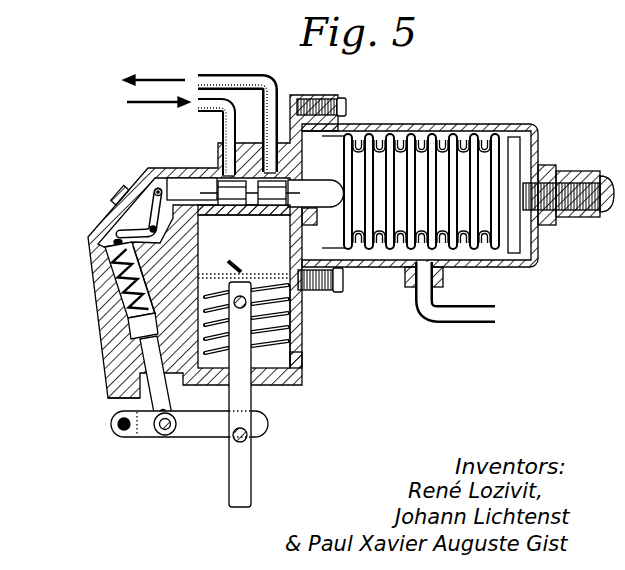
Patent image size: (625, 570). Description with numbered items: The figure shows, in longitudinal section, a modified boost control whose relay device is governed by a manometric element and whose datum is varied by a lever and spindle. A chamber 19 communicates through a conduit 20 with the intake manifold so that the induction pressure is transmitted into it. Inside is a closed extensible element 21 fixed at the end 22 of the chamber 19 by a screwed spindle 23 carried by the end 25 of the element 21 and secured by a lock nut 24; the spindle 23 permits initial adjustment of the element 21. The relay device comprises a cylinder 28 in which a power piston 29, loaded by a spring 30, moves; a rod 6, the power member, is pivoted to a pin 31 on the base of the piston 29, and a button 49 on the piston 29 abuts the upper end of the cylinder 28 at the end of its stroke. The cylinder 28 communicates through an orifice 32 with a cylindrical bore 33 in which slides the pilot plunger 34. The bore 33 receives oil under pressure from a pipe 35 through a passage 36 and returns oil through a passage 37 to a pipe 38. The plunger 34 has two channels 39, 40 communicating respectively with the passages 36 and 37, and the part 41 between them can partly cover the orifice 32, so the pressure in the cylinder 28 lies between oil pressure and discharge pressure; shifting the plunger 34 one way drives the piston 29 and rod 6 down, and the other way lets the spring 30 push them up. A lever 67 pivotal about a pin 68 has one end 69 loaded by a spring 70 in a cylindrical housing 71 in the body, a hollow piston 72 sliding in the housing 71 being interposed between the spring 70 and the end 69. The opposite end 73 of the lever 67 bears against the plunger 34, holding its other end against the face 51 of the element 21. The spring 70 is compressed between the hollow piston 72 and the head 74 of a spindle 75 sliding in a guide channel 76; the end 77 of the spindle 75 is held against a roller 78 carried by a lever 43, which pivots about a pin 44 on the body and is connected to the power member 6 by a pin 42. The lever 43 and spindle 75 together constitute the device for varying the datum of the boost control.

The rod 6 is at (243, 398).
The chamber 19 is at (483, 253).
The conduit 20 is at (458, 316).
The closed extensible element 21 is at (407, 142).
The end of the chamber 22 is at (545, 168).
The screwed spindle 23 is at (570, 176).
The lock nut 24 is at (558, 218).
The end of the element 25 is at (529, 138).
The cylinder 28 is at (290, 250).
The power piston 29 is at (301, 317).
The spring 30 is at (303, 354).
The pin 31 is at (303, 332).
The orifice 32 is at (252, 200).
The cylindrical bore 33 is at (296, 214).
The plunger 34 is at (320, 188).
The pipe 35 is at (194, 108).
The passage 36 is at (226, 178).
The passage 37 is at (270, 170).
The pipe 38 is at (220, 82).
The channel 39 is at (228, 203).
The channel 40 is at (270, 204).
The part of the plunger 41 is at (176, 176).
The pin 42 is at (244, 432).
The lever 43 is at (198, 427).
The pin 44 is at (117, 427).
The button 49 is at (236, 266).
The face of the element 51 is at (340, 130).
The lever 67 is at (140, 232).
The pin 68 is at (118, 228).
The end of the lever 69 is at (114, 243).
The spring 70 is at (120, 291).
The housing 71 is at (128, 308).
The hollow piston 72 is at (108, 258).
The end of the lever 73 is at (147, 183).
The head of the spindle 74 is at (131, 324).
The spindle 75 is at (138, 390).
The guide channel 76 is at (144, 364).
The end of the spindle 77 is at (160, 386).
The roller 78 is at (163, 437).